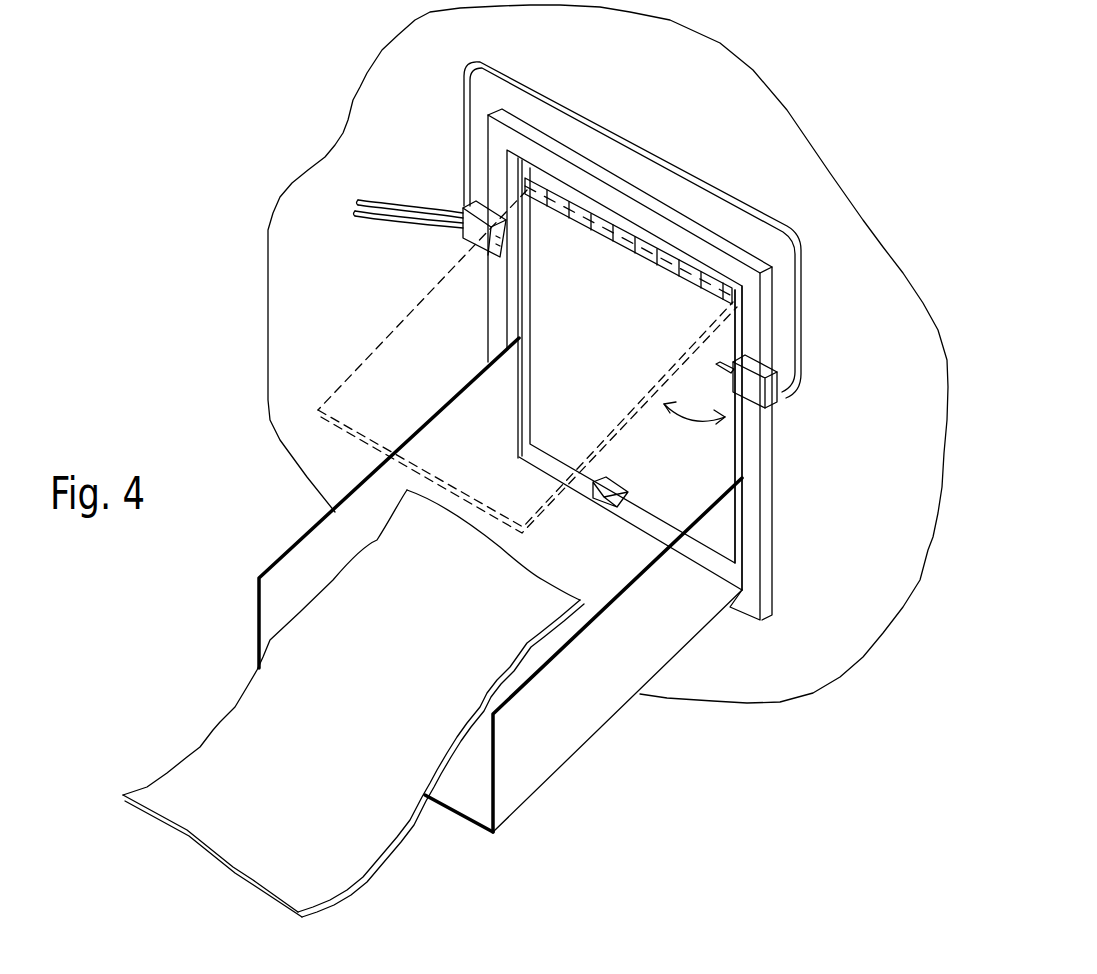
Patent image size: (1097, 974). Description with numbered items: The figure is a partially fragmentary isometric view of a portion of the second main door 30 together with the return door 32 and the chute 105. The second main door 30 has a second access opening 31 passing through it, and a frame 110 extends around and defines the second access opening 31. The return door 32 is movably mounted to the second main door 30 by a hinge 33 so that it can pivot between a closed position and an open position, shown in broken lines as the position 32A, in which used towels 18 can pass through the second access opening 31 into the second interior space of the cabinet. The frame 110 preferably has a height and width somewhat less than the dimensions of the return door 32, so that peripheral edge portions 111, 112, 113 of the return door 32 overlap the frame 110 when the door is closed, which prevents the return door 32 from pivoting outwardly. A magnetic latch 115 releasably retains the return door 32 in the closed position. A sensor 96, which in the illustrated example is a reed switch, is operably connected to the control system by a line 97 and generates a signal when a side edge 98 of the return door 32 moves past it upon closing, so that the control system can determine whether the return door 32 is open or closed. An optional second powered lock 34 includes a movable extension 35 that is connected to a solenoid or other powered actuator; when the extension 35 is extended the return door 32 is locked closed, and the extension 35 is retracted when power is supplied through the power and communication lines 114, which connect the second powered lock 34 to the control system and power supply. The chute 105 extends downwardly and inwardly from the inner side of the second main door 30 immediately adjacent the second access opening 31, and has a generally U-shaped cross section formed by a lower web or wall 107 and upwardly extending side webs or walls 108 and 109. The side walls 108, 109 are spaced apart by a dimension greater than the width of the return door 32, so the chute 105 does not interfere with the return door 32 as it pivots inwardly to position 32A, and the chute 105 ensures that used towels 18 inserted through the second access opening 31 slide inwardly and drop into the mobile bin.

The used towels 18 is at (223, 837).
The second main door 30 is at (822, 193).
The second access opening 31 is at (726, 466).
The return door 32 is at (680, 481).
The open position of return door 32A is at (355, 368).
The hinge 33 is at (607, 215).
The second powered lock 34 is at (766, 402).
The movable extension 35 is at (745, 378).
The sensor 96 is at (465, 232).
The line 97 is at (360, 226).
The side edge 98 is at (519, 306).
The chute 105 is at (570, 743).
The lower web or wall 107 is at (462, 798).
The side web or wall 108 is at (300, 558).
The side web or wall 109 is at (520, 780).
The frame 110 is at (772, 513).
The peripheral edge portion 111 is at (537, 273).
The peripheral edge portion 112 is at (666, 520).
The peripheral edge portion 113 is at (745, 450).
The power and communication lines 114 is at (800, 324).
The magnetic latch 115 is at (608, 500).